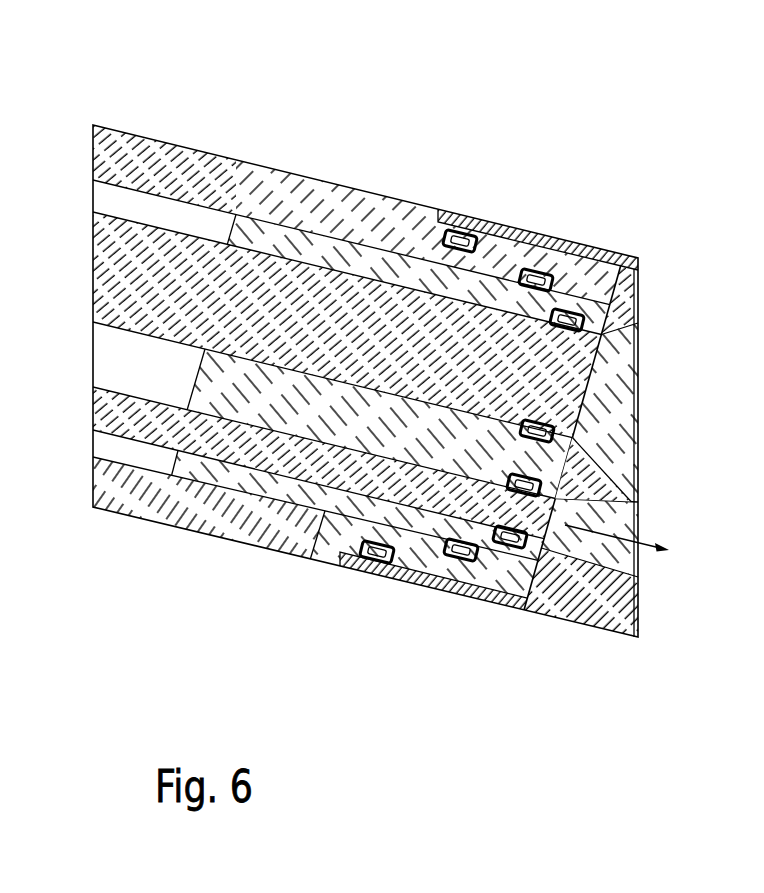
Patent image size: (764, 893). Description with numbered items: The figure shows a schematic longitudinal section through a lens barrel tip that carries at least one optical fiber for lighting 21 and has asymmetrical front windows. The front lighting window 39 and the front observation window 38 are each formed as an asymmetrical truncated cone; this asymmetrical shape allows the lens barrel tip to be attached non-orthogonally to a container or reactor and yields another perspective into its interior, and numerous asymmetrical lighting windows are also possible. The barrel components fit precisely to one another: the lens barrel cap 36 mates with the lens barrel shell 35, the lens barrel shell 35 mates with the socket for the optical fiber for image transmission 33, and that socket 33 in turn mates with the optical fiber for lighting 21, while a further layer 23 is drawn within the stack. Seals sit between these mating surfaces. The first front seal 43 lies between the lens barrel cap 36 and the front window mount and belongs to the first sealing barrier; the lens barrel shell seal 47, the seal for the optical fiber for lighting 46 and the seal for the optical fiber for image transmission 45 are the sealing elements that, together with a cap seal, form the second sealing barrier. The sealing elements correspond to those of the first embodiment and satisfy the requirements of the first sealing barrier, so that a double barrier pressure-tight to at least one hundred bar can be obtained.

The optical fiber for lighting 21 is at (272, 445).
The functional layer 23 is at (297, 320).
The socket for the optical fiber for image transmission 33 is at (323, 497).
The lens barrel shell 35 is at (233, 187).
The lens barrel cap 36 is at (473, 220).
The front observation window 38 is at (628, 397).
The front lighting window 39 is at (581, 626).
The first front seal 43 is at (536, 278).
The seal for the optical fiber for image transmission 45 is at (513, 540).
The seal for the optical fiber for lighting 46 is at (560, 318).
The lens barrel shell seal 47 is at (376, 560).